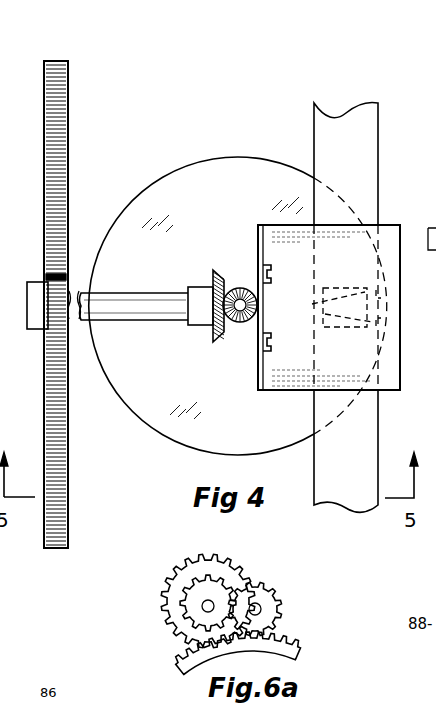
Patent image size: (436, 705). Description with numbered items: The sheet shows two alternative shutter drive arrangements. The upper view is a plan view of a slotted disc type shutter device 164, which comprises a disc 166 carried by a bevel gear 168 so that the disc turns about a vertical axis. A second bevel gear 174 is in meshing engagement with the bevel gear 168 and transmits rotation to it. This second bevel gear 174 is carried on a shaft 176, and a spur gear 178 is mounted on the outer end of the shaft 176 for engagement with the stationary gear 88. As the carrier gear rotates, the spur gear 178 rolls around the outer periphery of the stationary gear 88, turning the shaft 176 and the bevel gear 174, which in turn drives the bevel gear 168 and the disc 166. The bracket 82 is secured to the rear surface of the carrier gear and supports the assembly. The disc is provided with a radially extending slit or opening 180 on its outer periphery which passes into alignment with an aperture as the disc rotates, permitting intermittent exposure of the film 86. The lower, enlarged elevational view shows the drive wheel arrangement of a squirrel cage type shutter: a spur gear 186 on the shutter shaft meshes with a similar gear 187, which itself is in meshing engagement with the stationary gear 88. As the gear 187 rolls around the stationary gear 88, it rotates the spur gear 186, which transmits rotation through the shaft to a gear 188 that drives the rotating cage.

In FIG. 4, the bracket 82 is at (389, 245).
In FIG. 4, the film 86 is at (370, 135).
In FIG. 4, the stationary gear 88 is at (67, 117).
In FIG. 6A, the stationary gear 88 is at (188, 653).
In FIG. 4, the slotted disc type shutter device 164 is at (167, 446).
In FIG. 4, the disc 166 is at (135, 398).
In FIG. 4, the bevel gear 168 is at (240, 287).
In FIG. 4, the second bevel gear 174 is at (217, 284).
In FIG. 4, the shaft 176 is at (157, 314).
In FIG. 4, the spur gear 178 is at (60, 270).
In FIG. 4, the radially extending slit or opening 180 is at (340, 318).
In FIG. 6A, the spur gear 186 is at (222, 598).
In FIG. 6A, the gear 187 is at (272, 606).
In FIG. 6A, the gear 188 is at (236, 566).